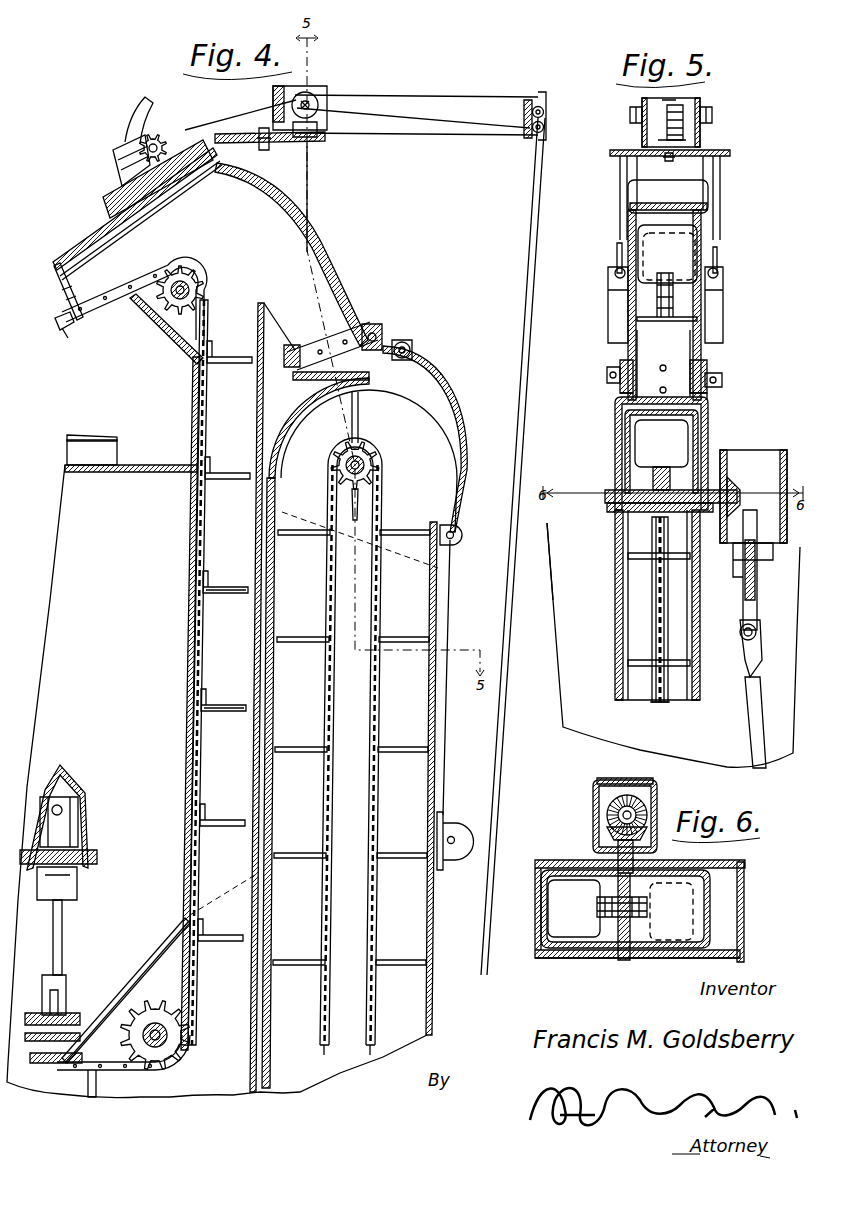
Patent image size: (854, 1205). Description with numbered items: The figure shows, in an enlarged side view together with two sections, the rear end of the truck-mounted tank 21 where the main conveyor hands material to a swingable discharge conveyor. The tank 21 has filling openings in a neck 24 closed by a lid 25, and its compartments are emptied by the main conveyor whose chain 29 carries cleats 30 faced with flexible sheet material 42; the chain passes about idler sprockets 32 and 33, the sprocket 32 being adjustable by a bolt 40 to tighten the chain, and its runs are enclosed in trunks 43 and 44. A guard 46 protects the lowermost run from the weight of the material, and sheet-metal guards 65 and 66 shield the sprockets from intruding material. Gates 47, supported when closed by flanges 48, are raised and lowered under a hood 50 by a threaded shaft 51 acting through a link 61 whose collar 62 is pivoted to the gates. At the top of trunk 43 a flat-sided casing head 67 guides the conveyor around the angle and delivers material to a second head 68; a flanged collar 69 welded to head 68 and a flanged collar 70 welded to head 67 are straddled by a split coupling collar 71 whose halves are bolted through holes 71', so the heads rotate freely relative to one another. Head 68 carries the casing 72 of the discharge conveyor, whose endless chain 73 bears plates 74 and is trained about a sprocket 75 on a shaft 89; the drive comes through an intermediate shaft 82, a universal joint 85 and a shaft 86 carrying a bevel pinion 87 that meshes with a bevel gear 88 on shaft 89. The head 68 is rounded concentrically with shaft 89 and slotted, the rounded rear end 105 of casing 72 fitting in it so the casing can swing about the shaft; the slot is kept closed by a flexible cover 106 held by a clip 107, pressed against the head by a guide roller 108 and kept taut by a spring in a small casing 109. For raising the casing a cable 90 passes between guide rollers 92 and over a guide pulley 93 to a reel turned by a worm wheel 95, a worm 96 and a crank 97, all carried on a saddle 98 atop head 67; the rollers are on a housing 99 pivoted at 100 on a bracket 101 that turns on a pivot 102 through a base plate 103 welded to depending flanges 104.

In FIG. 4, the tank 21 is at (65, 468).
In FIG. 5, the tank 21 is at (550, 562).
In FIG. 4, the neck 24 is at (118, 453).
In FIG. 4, the lid 25 is at (106, 433).
In FIG. 4, the chain 29 is at (62, 322).
In FIG. 5, the chain 29 is at (665, 318).
In FIG. 4, the cleats 30 is at (64, 288).
In FIG. 5, the cleats 30 is at (698, 240).
In FIG. 4, the sprocket 32 is at (168, 303).
In FIG. 4, the sprocket 33 is at (155, 1067).
In FIG. 5, the bolt 40 is at (617, 246).
In FIG. 4, the sheet material facing 42 is at (72, 290).
In FIG. 5, the sheet material facing 42 is at (690, 228).
In FIG. 4, the trunk 43 is at (62, 264).
In FIG. 4, the trunk 44 is at (192, 557).
In FIG. 4, the guard 46 is at (58, 1070).
In FIG. 4, the gates 47 is at (76, 1014).
In FIG. 4, the flanges 48 is at (118, 1038).
In FIG. 4, the hood 50 is at (88, 802).
In FIG. 4, the shaft 51 is at (62, 815).
In FIG. 4, the link 61 is at (62, 936).
In FIG. 4, the collar 62 is at (66, 985).
In FIG. 4, the guard 65 is at (168, 940).
In FIG. 4, the guard 66 is at (180, 340).
In FIG. 4, the casing head 67 is at (340, 280).
In FIG. 5, the casing head 67 is at (700, 352).
In FIG. 4, the conveyor head 68 is at (256, 436).
In FIG. 5, the conveyor head 68 is at (615, 441).
In FIG. 6, the conveyor head 68 is at (538, 958).
In FIG. 4, the flanged collar 69 is at (380, 342).
In FIG. 5, the flanged collar 69 is at (620, 390).
In FIG. 4, the flanged collar 70 is at (374, 324).
In FIG. 5, the flanged collar 70 is at (620, 370).
In FIG. 4, the split coupling collar 71 is at (346, 331).
In FIG. 5, the split coupling collar 71 is at (712, 374).
In FIG. 5, the holes 71' is at (661, 378).
In FIG. 4, the casing 72 is at (432, 1016).
In FIG. 5, the casing 72 is at (615, 652).
In FIG. 6, the casing 72 is at (541, 921).
In FIG. 4, the endless chain 73 is at (370, 1056).
In FIG. 5, the endless chain 73 is at (656, 703).
In FIG. 6, the endless chain 73 is at (600, 950).
In FIG. 4, the plates 74 is at (433, 960).
In FIG. 5, the plates 74 is at (645, 655).
In FIG. 6, the plates 74 is at (678, 941).
In FIG. 4, the sprocket 75 is at (358, 492).
In FIG. 5, the sprocket 75 is at (655, 505).
In FIG. 5, the intermediate shaft 82 is at (760, 768).
In FIG. 5, the universal joint 85 is at (740, 640).
In FIG. 5, the shaft 86 is at (757, 575).
In FIG. 6, the shaft 86 is at (628, 808).
In FIG. 5, the bevel pinion 87 is at (784, 495).
In FIG. 6, the bevel pinion 87 is at (598, 808).
In FIG. 5, the bevel gear 88 is at (734, 480).
In FIG. 6, the bevel gear 88 is at (607, 834).
In FIG. 4, the shaft 89 is at (366, 455).
In FIG. 5, the shaft 89 is at (606, 491).
In FIG. 6, the shaft 89 is at (625, 961).
In FIG. 4, the cable 90 is at (185, 130).
In FIG. 5, the cable 90 is at (660, 100).
In FIG. 4, the guide rollers 92 is at (545, 116).
In FIG. 4, the guide pulley 93 is at (318, 110).
In FIG. 5, the guide pulley 93 is at (674, 105).
In FIG. 4, the worm wheel 95 is at (158, 140).
In FIG. 4, the worm 96 is at (126, 167).
In FIG. 4, the crank 97 is at (132, 101).
In FIG. 4, the saddle 98 is at (118, 210).
In FIG. 5, the saddle 98 is at (628, 198).
In FIG. 4, the housing 99 is at (505, 97).
In FIG. 5, the housing 99 is at (712, 114).
In FIG. 4, the pivot 100 is at (312, 98).
In FIG. 4, the bracket 101 is at (325, 128).
In FIG. 5, the bracket 101 is at (701, 133).
In FIG. 4, the pivot 102 is at (264, 128).
In FIG. 5, the pivot 102 is at (669, 161).
In FIG. 4, the base plate 103 is at (238, 133).
In FIG. 5, the base plate 103 is at (610, 152).
In FIG. 4, the depending flanges 104 is at (309, 165).
In FIG. 5, the depending flanges 104 is at (619, 167).
In FIG. 4, the rounded rear end 105 is at (318, 402).
In FIG. 4, the flexible cover 106 is at (456, 400).
In FIG. 4, the clip 107 is at (412, 348).
In FIG. 4, the guide roller 108 is at (411, 351).
In FIG. 4, the small casing 109 is at (457, 828).